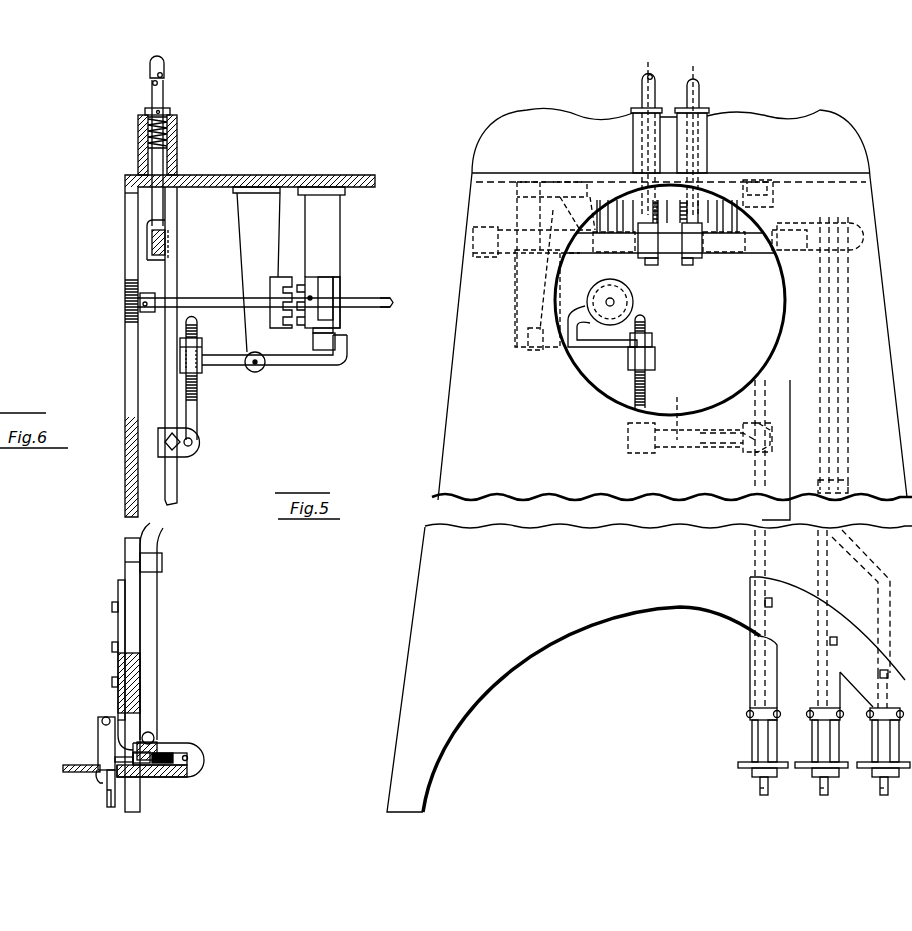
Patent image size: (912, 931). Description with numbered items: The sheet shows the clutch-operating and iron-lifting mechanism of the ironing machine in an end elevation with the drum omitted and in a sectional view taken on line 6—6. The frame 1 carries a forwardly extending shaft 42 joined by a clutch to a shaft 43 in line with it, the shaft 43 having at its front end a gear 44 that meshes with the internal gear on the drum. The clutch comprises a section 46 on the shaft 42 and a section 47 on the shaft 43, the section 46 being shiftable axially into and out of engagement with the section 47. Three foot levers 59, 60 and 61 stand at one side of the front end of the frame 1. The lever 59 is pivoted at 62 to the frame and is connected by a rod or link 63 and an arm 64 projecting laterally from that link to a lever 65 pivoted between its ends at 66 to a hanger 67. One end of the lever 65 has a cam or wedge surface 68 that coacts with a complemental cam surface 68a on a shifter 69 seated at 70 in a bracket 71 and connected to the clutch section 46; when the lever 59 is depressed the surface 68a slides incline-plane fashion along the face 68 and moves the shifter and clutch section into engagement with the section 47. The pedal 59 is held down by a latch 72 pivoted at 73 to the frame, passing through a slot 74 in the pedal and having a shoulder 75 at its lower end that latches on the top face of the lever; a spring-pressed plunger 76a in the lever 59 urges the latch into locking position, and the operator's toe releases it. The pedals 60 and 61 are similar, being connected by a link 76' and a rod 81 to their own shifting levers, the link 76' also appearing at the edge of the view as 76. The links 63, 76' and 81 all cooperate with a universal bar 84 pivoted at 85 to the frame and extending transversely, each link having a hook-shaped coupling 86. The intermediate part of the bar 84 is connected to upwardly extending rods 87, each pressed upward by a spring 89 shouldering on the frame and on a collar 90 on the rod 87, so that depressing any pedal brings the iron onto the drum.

In FIG. 6, the frame 1 is at (222, 176).
In FIG. 5, the frame 1 is at (512, 505).
In FIG. 5, the section line 6 is at (646, 58).
In FIG. 6, the shaft 42 is at (391, 298).
In FIG. 6, the shaft 43 is at (207, 299).
In FIG. 6, the gear 44 is at (128, 285).
In FIG. 6, the clutch section 46 is at (341, 287).
In FIG. 5, the clutch section 46 is at (634, 300).
In FIG. 6, the clutch section 47 is at (278, 277).
In FIG. 6, the foot lever 59 is at (68, 764).
In FIG. 5, the foot lever 59 is at (745, 768).
In FIG. 5, the foot lever 60 is at (870, 768).
In FIG. 5, the foot lever 61 is at (805, 770).
In FIG. 6, the pivot 62 is at (203, 757).
In FIG. 6, the rod or link 63 is at (171, 268).
In FIG. 5, the rod or link 63 is at (762, 538).
In FIG. 6, the arm 64 is at (195, 404).
In FIG. 5, the arm 64 is at (647, 393).
In FIG. 6, the lever 65 is at (302, 364).
In FIG. 6, the pivot 66 is at (253, 366).
In FIG. 6, the support or hanger 67 is at (250, 322).
In FIG. 6, the cam or wedge surface 68 is at (348, 348).
In FIG. 6, the complemental cam surface 68a is at (320, 355).
In FIG. 6, the shifter 69 is at (326, 282).
In FIG. 5, the shifter 69 is at (602, 338).
In FIG. 5, the pivot 70 is at (533, 350).
In FIG. 6, the bracket 71 is at (342, 220).
In FIG. 5, the bracket 71 is at (518, 318).
In FIG. 6, the latch 72 is at (103, 740).
In FIG. 5, the latch 72 is at (760, 733).
In FIG. 6, the pivot 73 is at (102, 720).
In FIG. 5, the pivot 73 is at (812, 713).
In FIG. 6, the slot 74 is at (100, 773).
In FIG. 6, the shoulder 75 is at (108, 792).
In FIG. 5, the shoulder 75 is at (767, 792).
In FIG. 5, the curved plate 76 is at (836, 642).
In FIG. 5, the link 76' is at (855, 355).
In FIG. 6, the spring pressed plunger 76a is at (153, 738).
In FIG. 5, the rod 81 is at (832, 538).
In FIG. 6, the universal bar 84 is at (158, 242).
In FIG. 5, the universal bar 84 is at (746, 253).
In FIG. 5, the pivot 85 is at (482, 240).
In FIG. 6, the hook-shaped coupling 86 is at (156, 223).
In FIG. 5, the hook-shaped coupling 86 is at (847, 223).
In FIG. 6, the rod 87 is at (151, 92).
In FIG. 5, the rod 87 is at (693, 85).
In FIG. 6, the spring 89 is at (139, 122).
In FIG. 6, the collar 90 is at (171, 111).
In FIG. 5, the collar 90 is at (690, 108).